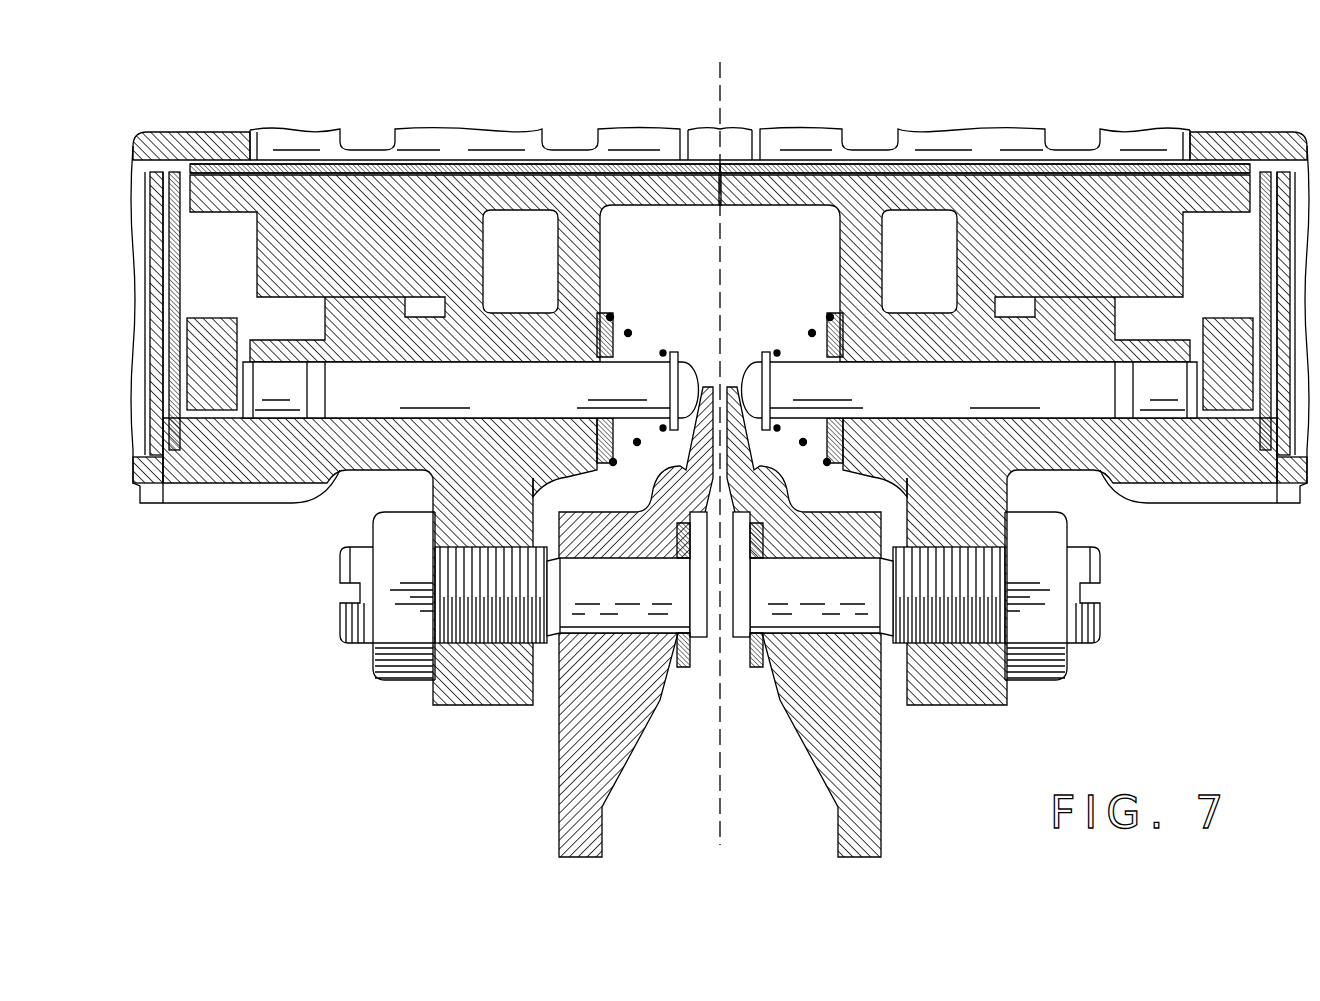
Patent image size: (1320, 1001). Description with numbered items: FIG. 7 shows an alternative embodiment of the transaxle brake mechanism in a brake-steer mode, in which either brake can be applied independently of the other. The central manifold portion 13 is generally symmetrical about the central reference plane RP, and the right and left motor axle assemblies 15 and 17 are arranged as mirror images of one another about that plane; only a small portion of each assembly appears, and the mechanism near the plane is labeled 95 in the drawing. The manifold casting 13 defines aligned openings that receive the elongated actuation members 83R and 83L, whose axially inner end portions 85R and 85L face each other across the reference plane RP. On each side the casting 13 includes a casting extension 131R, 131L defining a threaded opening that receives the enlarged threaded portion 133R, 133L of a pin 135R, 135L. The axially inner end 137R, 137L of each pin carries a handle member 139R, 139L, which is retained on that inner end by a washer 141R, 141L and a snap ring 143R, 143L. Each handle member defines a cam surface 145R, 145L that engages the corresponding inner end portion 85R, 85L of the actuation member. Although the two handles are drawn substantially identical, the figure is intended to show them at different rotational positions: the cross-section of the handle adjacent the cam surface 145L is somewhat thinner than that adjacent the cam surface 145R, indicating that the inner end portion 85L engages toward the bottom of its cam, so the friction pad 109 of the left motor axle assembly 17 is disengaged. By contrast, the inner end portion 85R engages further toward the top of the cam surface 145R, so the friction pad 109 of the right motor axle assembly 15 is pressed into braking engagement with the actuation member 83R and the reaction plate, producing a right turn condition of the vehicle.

The central manifold portion 13 is at (793, 190).
The right motor axle assembly 15 is at (1205, 113).
The left motor axle assembly 17 is at (262, 106).
The central reference plane RP is at (718, 122).
The friction pad 109 is at (214, 333).
The left actuation member 83L is at (471, 390).
The right actuation member 83R is at (970, 390).
The axially inner end portion of left actuation member 85L is at (688, 368).
The axially inner end portion of right actuation member 85R is at (752, 368).
The left casting extension 131L is at (490, 698).
The right casting extension 131R is at (933, 693).
The threaded portion of left pin 133L is at (478, 567).
The threaded portion of right pin 133R is at (952, 567).
The left pin 135L is at (338, 571).
The right pin 135R is at (1100, 577).
The axially inner end of left pin 137L is at (612, 615).
The axially inner end of right pin 137R is at (820, 615).
The left handle member 139L is at (610, 762).
The right handle member 139R is at (830, 763).
The left washer 141L is at (660, 556).
The right washer 141R is at (777, 556).
The left snap ring 143L is at (687, 672).
The right snap ring 143R is at (753, 672).
The left cam surface 145L is at (650, 478).
The right cam surface 145R is at (788, 478).
The actuator assembly 95 is at (517, 788).